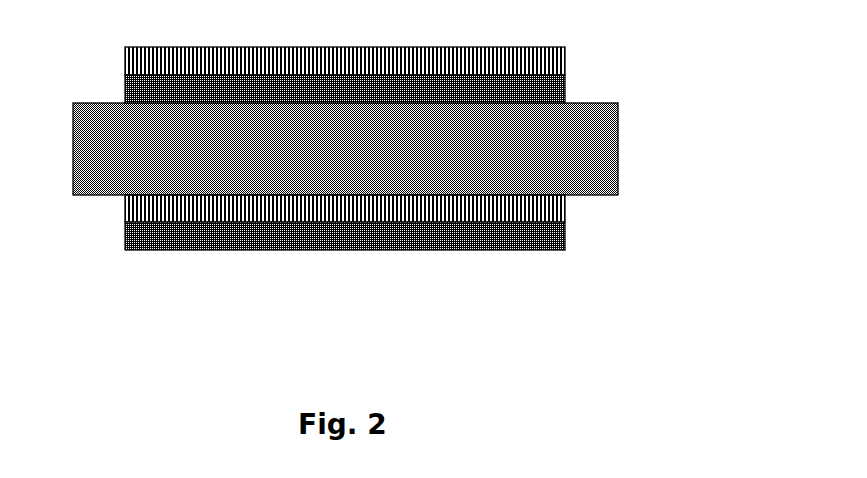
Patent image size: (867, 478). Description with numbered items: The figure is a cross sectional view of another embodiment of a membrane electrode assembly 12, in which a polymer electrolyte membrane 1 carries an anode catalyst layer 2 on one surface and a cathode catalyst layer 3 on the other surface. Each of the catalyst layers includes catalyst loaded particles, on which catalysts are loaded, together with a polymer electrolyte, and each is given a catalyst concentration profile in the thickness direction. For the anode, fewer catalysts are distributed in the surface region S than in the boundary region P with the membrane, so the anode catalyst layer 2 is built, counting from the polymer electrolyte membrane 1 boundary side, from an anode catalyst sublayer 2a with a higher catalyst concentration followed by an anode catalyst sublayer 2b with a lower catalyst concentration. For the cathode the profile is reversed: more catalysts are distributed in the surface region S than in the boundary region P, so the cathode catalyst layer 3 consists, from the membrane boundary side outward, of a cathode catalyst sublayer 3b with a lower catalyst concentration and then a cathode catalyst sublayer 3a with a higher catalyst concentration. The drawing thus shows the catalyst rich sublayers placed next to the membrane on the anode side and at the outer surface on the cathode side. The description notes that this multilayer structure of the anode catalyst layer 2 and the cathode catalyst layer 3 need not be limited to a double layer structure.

The polymer electrolyte membrane 1 is at (617, 150).
The anode catalyst layer 2 is at (410, 71).
The catalyst rich region of anode catalyst layer 2a is at (566, 92).
The catalyst poor region of anode catalyst layer 2b is at (566, 65).
The cathode catalyst layer 3 is at (409, 226).
The catalyst rich region of cathode catalyst layer 3a is at (650, 205).
The catalyst poor region of cathode catalyst layer 3b is at (566, 205).
The membrane electrode assembly 12 is at (440, 148).
The surface region S is at (122, 47).
The boundary region P is at (122, 98).